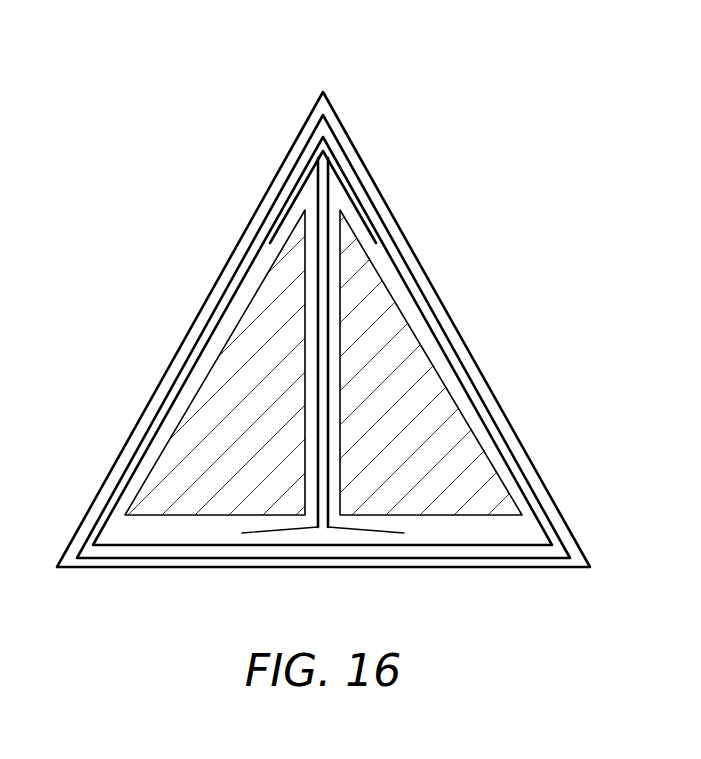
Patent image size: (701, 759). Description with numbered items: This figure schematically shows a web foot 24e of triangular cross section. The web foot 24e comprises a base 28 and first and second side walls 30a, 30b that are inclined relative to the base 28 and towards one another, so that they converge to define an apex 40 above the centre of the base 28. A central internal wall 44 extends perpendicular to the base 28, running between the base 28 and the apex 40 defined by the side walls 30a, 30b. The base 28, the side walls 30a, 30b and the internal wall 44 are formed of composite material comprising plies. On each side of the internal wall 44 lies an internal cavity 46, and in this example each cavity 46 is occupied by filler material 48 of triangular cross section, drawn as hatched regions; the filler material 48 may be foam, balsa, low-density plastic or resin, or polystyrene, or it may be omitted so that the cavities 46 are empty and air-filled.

The web foot 24e is at (146, 146).
The apex 40 is at (321, 86).
The base 28 is at (432, 577).
The internal cavities 46 is at (124, 527).
The central internal wall 44 is at (322, 525).
The first side wall 30a is at (160, 298).
The second side wall 30b is at (486, 298).
The filler material 48 is at (185, 448).